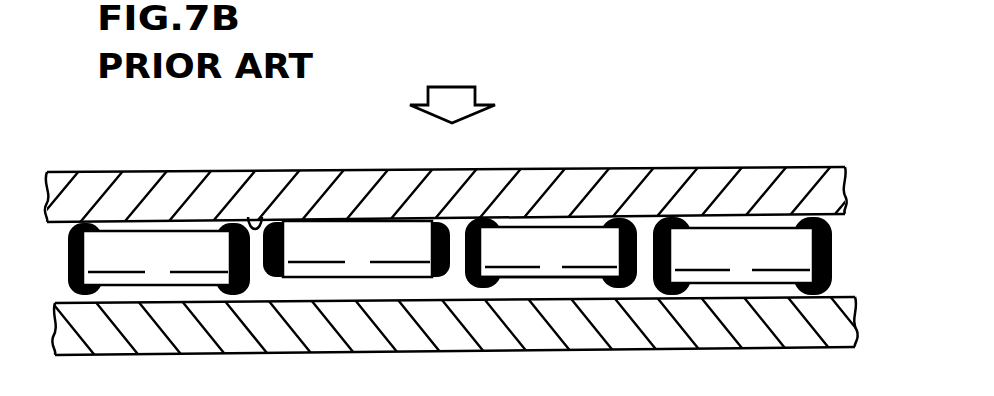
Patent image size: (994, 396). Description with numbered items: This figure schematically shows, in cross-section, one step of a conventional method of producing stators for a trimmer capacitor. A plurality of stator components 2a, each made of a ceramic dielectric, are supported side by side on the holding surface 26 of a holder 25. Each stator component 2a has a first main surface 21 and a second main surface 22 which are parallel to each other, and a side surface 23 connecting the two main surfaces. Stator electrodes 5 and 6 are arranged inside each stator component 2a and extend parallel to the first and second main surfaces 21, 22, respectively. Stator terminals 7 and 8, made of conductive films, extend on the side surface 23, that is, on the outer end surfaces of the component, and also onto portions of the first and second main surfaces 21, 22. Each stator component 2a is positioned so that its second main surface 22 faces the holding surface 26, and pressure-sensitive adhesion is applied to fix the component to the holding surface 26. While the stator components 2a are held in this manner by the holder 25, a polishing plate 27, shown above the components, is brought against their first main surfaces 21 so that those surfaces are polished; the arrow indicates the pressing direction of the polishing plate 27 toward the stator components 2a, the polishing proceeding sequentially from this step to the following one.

The holder 25 is at (586, 178).
The polishing plate 27 is at (291, 345).
The holding surface 26 is at (250, 218).
The stator electrode 5 is at (304, 260).
The stator electrode 6 is at (387, 260).
The second main surface 22 is at (535, 220).
The first main surface 21 is at (552, 283).
The side surface 23 is at (465, 270).
The stator terminal 7 is at (672, 215).
The stator component 2a is at (750, 224).
The stator terminal 8 is at (806, 224).